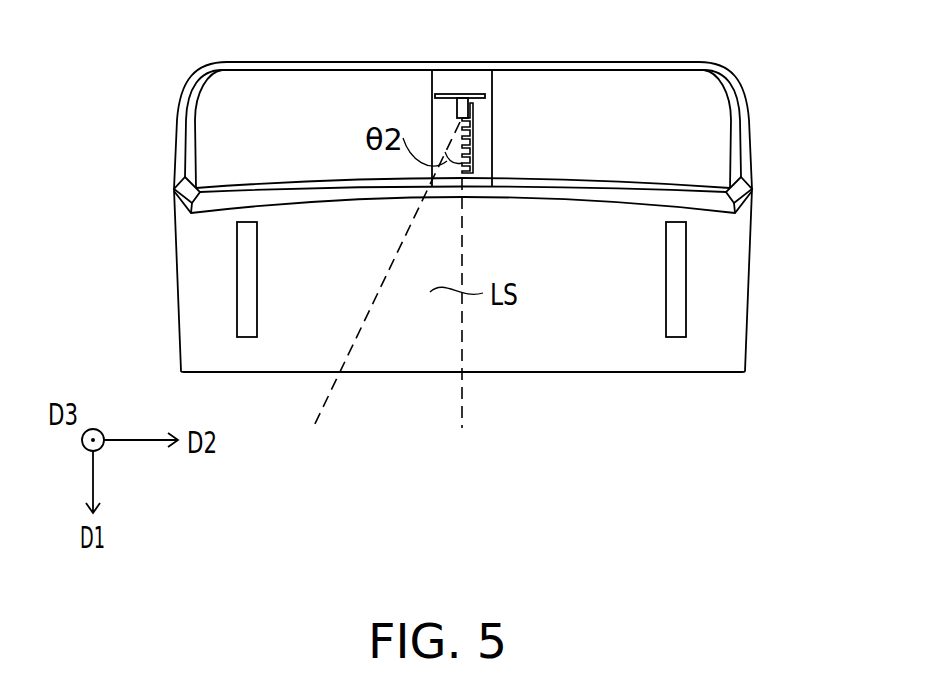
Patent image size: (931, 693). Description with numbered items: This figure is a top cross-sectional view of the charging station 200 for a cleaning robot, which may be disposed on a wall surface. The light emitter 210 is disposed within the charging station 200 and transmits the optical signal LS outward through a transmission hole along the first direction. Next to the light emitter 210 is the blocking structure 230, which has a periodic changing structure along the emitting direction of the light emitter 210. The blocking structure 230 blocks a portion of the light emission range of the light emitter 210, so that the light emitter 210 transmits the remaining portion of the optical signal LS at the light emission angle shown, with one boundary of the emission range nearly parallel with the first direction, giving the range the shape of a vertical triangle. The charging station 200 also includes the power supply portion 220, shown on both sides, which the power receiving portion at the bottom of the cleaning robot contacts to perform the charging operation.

The charging station 200 is at (287, 62).
The light emitter 210 is at (462, 108).
The power supply portion 220 is at (247, 283).
The blocking structure 230 is at (473, 142).